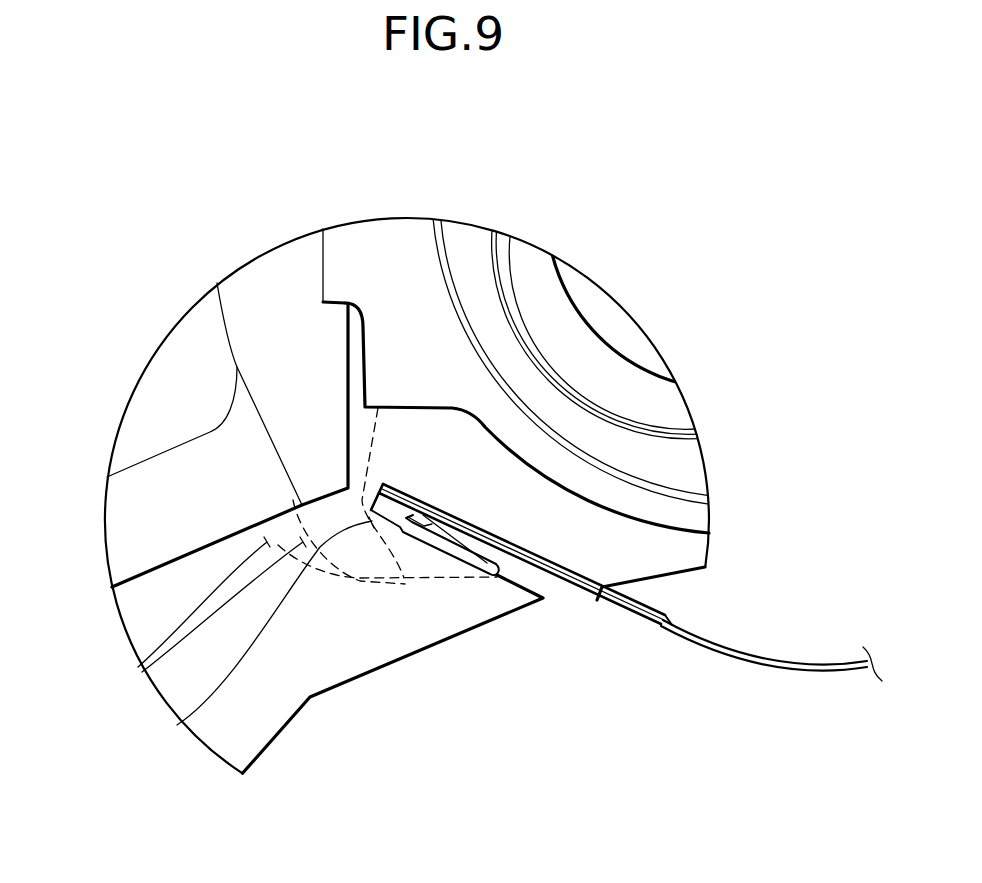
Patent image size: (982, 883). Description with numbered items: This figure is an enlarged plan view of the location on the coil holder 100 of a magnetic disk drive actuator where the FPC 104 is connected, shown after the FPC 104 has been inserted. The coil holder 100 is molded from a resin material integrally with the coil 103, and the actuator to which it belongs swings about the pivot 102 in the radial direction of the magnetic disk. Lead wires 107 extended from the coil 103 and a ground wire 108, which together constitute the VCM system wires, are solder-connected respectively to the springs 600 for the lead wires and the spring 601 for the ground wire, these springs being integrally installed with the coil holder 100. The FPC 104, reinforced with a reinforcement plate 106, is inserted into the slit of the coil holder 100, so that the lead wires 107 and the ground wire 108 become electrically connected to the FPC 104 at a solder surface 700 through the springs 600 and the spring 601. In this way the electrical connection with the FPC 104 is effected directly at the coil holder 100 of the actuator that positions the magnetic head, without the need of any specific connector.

The coil holder 100 is at (352, 663).
The pivot 102 is at (620, 326).
The coil 103 is at (137, 502).
The FPC 104 is at (757, 652).
The reinforcement plate 106 is at (660, 612).
The lead wires 107 is at (138, 667).
The ground wire 108 is at (177, 725).
The springs for the lead wires 600 is at (464, 597).
The spring for the ground wire 601 is at (463, 553).
The solder surface 700 is at (626, 578).